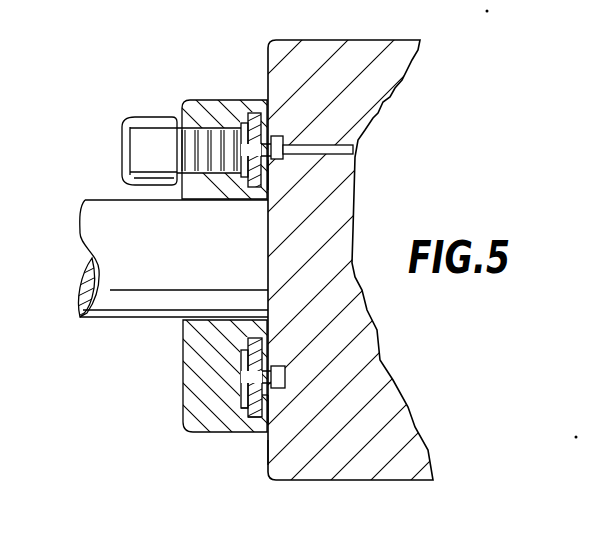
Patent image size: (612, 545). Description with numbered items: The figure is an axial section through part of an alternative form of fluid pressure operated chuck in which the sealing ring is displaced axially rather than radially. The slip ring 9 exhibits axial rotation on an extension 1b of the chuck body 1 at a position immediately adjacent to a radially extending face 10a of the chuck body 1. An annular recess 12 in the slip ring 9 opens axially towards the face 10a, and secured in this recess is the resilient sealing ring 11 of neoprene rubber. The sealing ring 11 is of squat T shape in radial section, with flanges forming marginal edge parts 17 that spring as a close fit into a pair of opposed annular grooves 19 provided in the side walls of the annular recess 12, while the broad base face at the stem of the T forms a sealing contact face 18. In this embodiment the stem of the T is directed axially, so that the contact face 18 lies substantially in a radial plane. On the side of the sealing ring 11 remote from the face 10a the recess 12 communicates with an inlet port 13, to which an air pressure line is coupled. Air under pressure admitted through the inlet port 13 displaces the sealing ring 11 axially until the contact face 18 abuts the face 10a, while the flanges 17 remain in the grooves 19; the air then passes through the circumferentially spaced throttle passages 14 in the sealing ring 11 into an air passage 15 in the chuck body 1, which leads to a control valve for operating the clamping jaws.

The chuck body 1 is at (343, 440).
The extension of the chuck body 1b is at (96, 227).
The slip ring 9 is at (194, 388).
The radially extending face of the chuck body 10a is at (270, 456).
The sealing ring 11 is at (276, 178).
The annular recess 12 is at (240, 122).
The inlet port 13 is at (188, 106).
The throttle passages 14 is at (275, 377).
The air passage 15 is at (350, 143).
The marginal edge parts 17 is at (248, 421).
The sealing contact face 18 is at (274, 128).
The annular grooves 19 is at (245, 417).